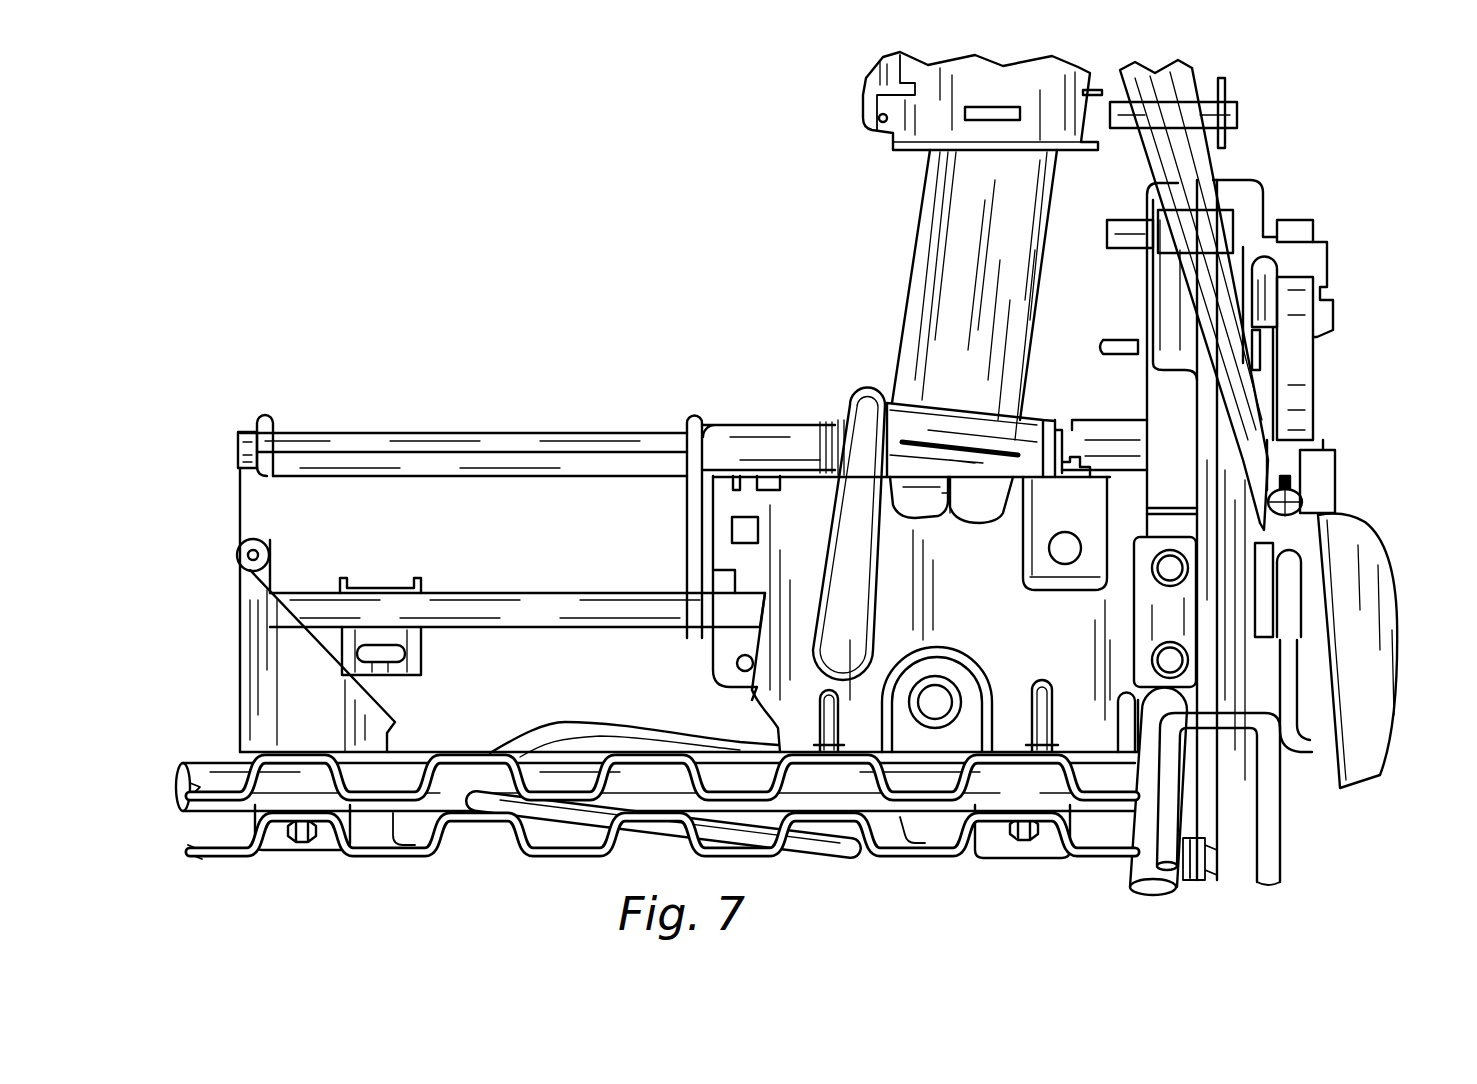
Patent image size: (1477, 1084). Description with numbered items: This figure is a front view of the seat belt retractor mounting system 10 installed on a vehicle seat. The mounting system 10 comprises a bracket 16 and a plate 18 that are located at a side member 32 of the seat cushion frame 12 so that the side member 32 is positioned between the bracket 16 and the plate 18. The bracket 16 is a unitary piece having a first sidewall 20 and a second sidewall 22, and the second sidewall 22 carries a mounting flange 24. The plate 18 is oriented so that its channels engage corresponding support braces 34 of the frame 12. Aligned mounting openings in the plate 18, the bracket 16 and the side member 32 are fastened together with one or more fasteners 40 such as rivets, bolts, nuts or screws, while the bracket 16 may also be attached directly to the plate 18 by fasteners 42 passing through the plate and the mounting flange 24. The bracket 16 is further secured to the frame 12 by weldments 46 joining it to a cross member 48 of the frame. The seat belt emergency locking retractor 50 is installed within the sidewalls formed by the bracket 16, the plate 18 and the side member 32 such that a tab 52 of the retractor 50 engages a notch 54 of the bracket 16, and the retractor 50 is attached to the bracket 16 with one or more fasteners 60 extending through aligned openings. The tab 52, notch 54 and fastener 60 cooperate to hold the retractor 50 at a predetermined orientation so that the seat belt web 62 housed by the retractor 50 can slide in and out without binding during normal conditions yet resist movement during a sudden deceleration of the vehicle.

The seat belt retractor mounting system 10 is at (760, 290).
The seat cushion frame 12 is at (208, 509).
The bracket 16 is at (1075, 727).
The plate 18 is at (778, 428).
The first sidewall 20 is at (1009, 624).
The second sidewall 22 is at (763, 703).
The mounting flange 24 is at (728, 650).
The side member 32 is at (1205, 790).
The support braces 34 is at (520, 450).
The fasteners 40 is at (1172, 568).
The fasteners 42 is at (745, 528).
The weldments 46 is at (833, 752).
The cross member 48 is at (412, 757).
The seat belt emergency locking retractor 50 is at (845, 400).
The tab 52 is at (920, 500).
The notch 54 is at (1005, 512).
The fasteners 60 is at (935, 702).
The seat belt web 62 is at (935, 227).